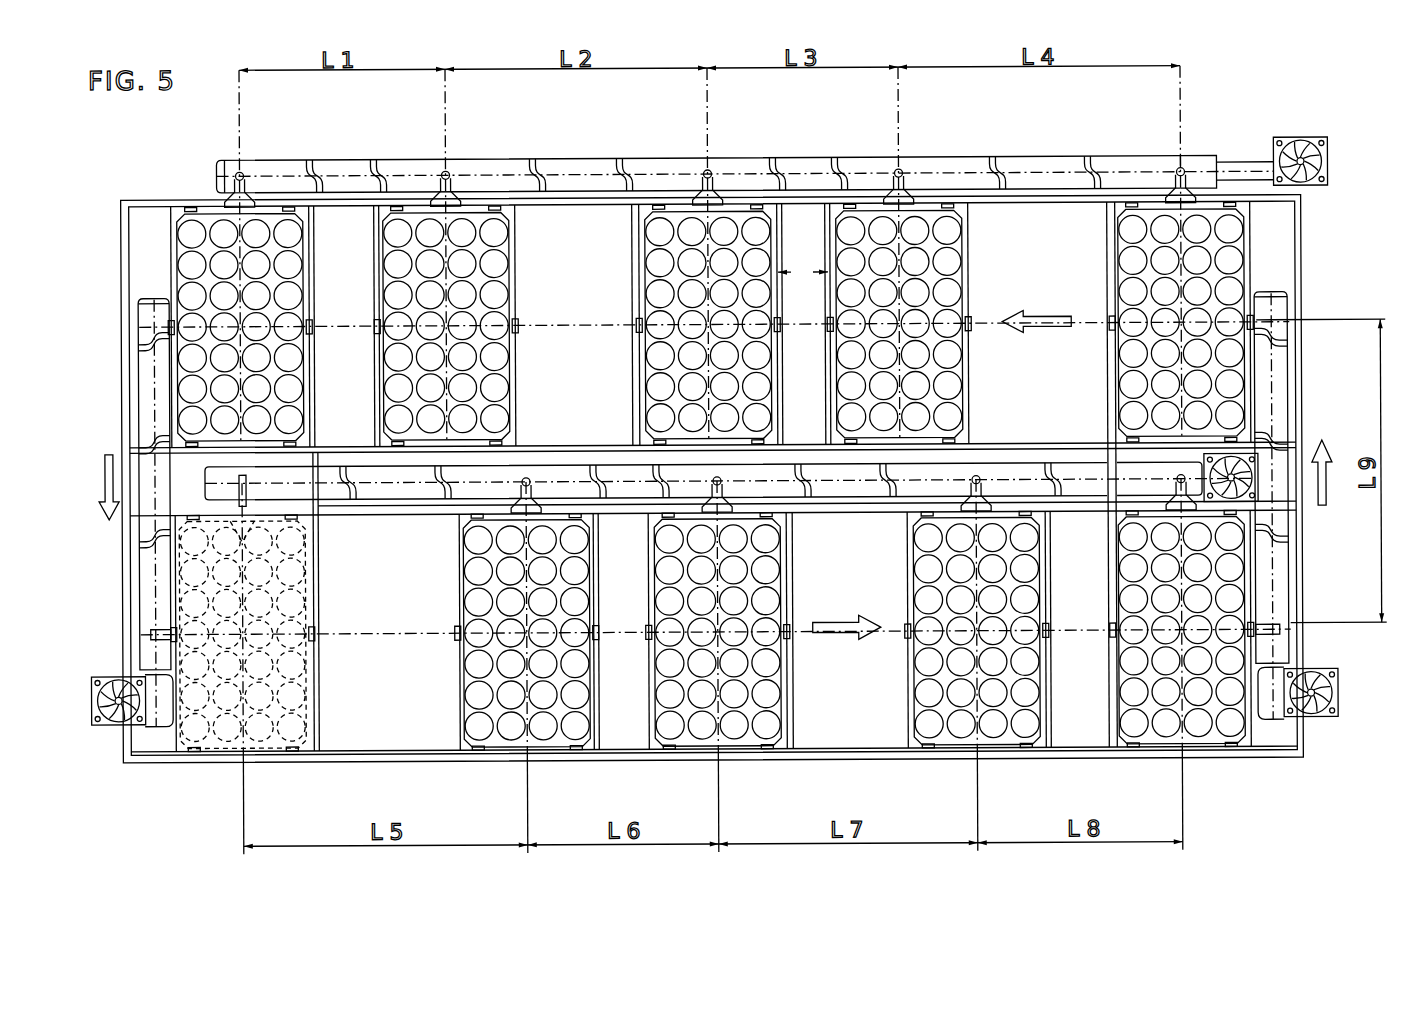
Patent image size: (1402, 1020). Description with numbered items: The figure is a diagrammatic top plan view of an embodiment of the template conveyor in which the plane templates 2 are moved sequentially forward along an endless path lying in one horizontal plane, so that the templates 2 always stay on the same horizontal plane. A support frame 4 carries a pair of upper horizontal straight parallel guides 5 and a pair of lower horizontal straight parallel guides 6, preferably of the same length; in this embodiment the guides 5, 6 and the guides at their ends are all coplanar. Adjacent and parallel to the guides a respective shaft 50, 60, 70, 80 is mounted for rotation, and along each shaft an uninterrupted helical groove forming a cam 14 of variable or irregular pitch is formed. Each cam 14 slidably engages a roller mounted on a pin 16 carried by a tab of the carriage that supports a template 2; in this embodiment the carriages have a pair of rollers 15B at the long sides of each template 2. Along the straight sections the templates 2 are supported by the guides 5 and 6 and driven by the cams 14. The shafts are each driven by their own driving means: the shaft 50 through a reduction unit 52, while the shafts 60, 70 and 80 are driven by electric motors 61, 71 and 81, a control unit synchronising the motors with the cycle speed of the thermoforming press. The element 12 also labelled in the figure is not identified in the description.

The plane template 2 is at (803, 272).
The support frame 4 is at (1316, 242).
The upper horizontal straight parallel guides 5 is at (548, 207).
The lower horizontal straight parallel guides 6 is at (435, 520).
The support tab 12 is at (178, 195).
The helical groove cam 14 is at (1092, 163).
The roller 15B is at (368, 335).
The pin 16 is at (903, 170).
The shaft 50 is at (1200, 163).
The reduction unit 52 is at (1322, 140).
The shaft 60 is at (400, 490).
The electric motor 61 is at (1258, 456).
The shaft 70 is at (148, 383).
The electric motor 71 is at (106, 728).
The shaft 80 is at (1277, 308).
The electric motor 81 is at (1330, 720).